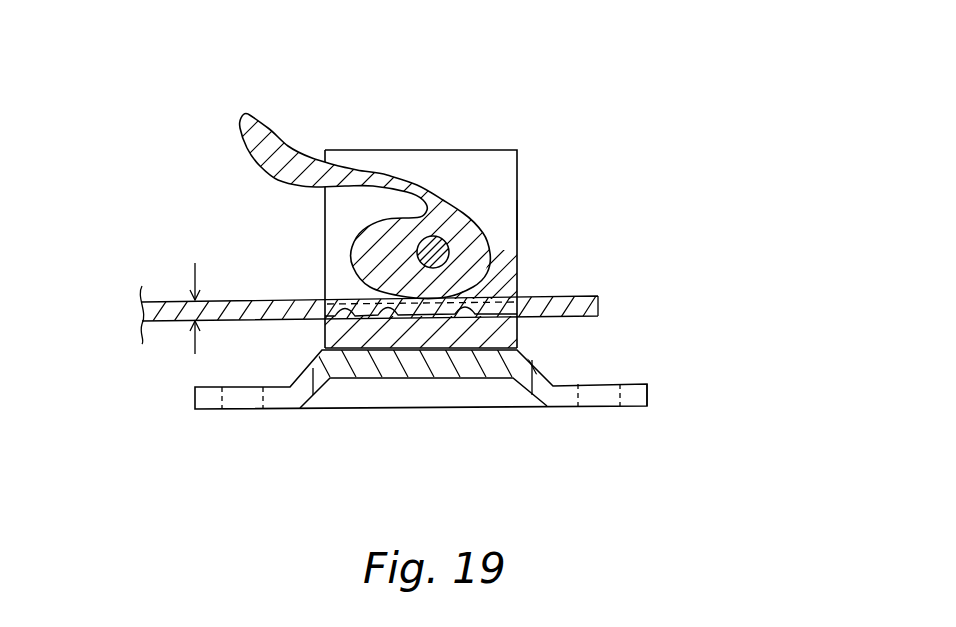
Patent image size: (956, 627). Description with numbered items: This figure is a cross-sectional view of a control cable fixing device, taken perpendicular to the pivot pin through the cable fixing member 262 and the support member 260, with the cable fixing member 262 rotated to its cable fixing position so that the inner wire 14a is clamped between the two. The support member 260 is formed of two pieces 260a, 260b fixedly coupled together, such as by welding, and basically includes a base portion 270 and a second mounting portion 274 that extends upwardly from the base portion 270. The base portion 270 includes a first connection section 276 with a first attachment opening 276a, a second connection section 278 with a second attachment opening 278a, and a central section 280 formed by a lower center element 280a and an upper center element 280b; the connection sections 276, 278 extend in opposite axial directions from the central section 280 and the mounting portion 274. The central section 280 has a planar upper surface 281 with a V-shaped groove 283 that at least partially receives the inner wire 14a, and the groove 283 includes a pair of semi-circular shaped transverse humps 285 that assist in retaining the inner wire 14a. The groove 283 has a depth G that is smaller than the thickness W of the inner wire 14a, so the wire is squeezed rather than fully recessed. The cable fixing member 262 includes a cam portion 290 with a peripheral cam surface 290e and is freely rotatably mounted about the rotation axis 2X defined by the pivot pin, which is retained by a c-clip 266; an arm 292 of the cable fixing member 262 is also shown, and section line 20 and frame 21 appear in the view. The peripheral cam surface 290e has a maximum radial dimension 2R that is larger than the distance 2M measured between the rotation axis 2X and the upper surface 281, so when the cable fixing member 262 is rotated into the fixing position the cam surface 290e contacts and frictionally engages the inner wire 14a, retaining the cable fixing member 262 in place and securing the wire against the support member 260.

The inner wire 14a is at (160, 300).
The thickness of the inner wire W is at (194, 268).
The second mounting portion 274 is at (518, 150).
The piece of the support member 260b is at (520, 211).
The cam portion 290 is at (350, 228).
The hook arm 292 is at (241, 152).
The cable fixing member 262 is at (163, 148).
The peripheral cam surface 290e is at (348, 277).
The c-clip 266 is at (440, 236).
The rotation axis 2X is at (497, 205).
The transverse humps 285 is at (473, 287).
The upper surface 281 is at (502, 297).
The V-shaped groove 283 is at (340, 308).
The central section 280 is at (522, 342).
The base portion 270 is at (303, 358).
The second connection section 278 is at (208, 403).
The second attachment opening 278a is at (233, 412).
The first connection section 276 is at (563, 393).
The first attachment opening 276a is at (622, 392).
The piece of the support member 260a is at (653, 383).
The upper center element 280b is at (372, 337).
The lower center element 280a is at (398, 365).
The frame 21 is at (174, 402).
The section line 20 is at (412, 135).
The maximum radial dimension 2R is at (410, 63).
The distance 2M is at (608, 248).
The depth of the groove G is at (608, 316).
The support member 260 is at (760, 178).